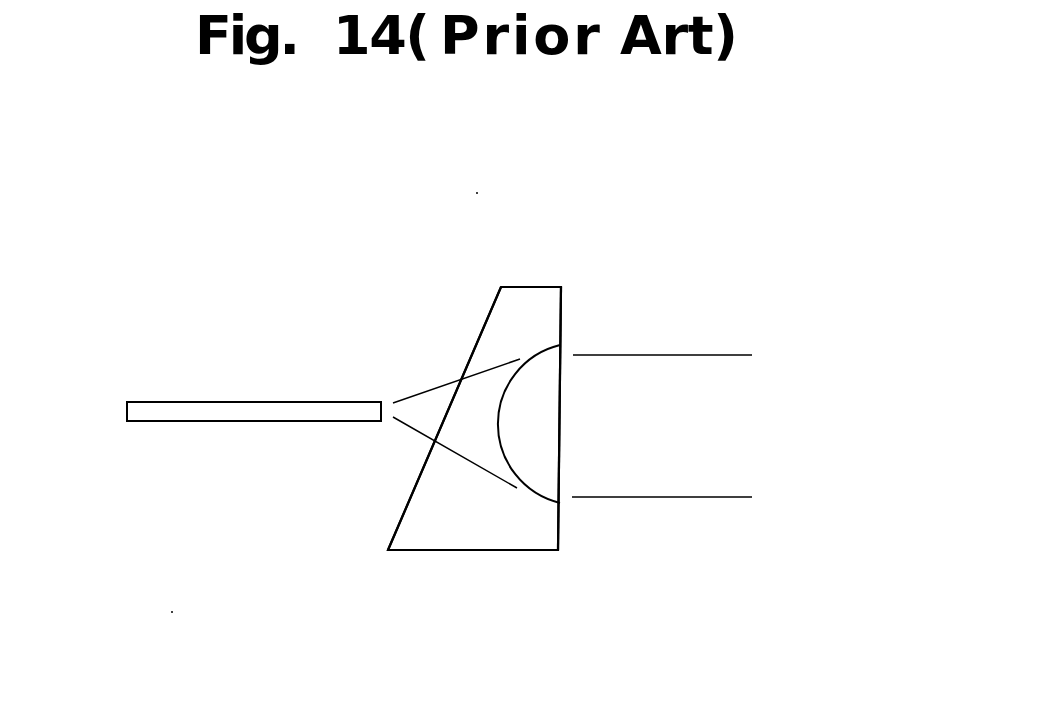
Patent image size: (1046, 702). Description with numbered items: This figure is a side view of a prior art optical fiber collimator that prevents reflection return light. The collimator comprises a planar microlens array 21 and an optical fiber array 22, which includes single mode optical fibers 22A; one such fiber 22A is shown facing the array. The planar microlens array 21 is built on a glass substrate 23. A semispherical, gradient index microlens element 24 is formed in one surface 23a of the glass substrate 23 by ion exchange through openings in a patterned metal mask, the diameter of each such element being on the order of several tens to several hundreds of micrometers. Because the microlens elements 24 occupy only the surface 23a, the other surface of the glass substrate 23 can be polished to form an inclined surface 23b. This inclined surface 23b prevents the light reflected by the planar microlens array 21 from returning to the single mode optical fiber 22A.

The planar microlens array 21 is at (540, 272).
The optical fiber array 22 is at (241, 390).
The single mode optical fiber 22A is at (220, 420).
The glass substrate 23 is at (463, 545).
The surface of the glass substrate 23a is at (560, 538).
The inclined surface 23b is at (389, 533).
The microlens element 24 is at (553, 412).